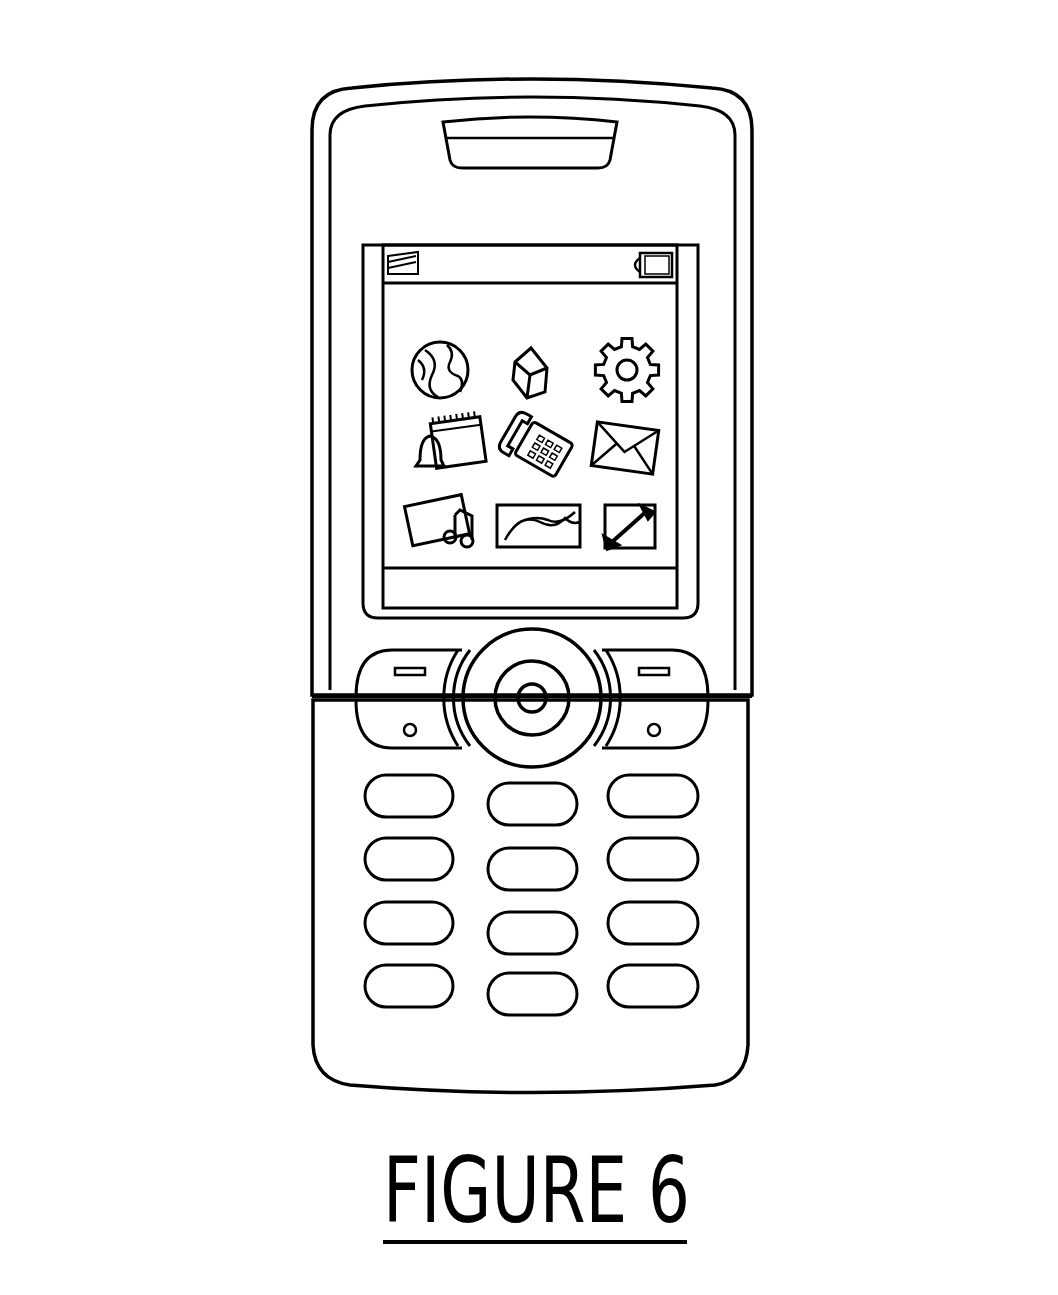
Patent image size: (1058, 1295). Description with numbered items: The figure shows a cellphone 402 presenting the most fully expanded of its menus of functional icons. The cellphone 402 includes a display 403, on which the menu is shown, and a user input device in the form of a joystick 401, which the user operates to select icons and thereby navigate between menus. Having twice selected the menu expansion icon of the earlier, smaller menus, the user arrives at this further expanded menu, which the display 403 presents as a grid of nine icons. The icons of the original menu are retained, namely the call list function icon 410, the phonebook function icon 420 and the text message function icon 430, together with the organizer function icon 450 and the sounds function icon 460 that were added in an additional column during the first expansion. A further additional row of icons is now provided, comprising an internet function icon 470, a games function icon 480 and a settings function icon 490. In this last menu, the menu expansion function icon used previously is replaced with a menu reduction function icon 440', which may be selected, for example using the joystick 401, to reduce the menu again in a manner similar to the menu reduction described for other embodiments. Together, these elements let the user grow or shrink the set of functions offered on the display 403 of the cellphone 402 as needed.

The joystick 401 is at (547, 728).
The cellphone 402 is at (665, 84).
The display 403 is at (660, 563).
The call list function icon 410 is at (530, 467).
The phonebook function icon 420 is at (537, 535).
The text message function icon 430 is at (648, 430).
The menu reduction function icon 440' is at (746, 528).
The organizer function icon 450 is at (428, 423).
The sounds function icon 460 is at (413, 510).
The internet function icon 470 is at (432, 342).
The games function icon 480 is at (543, 373).
The settings function icon 490 is at (647, 352).